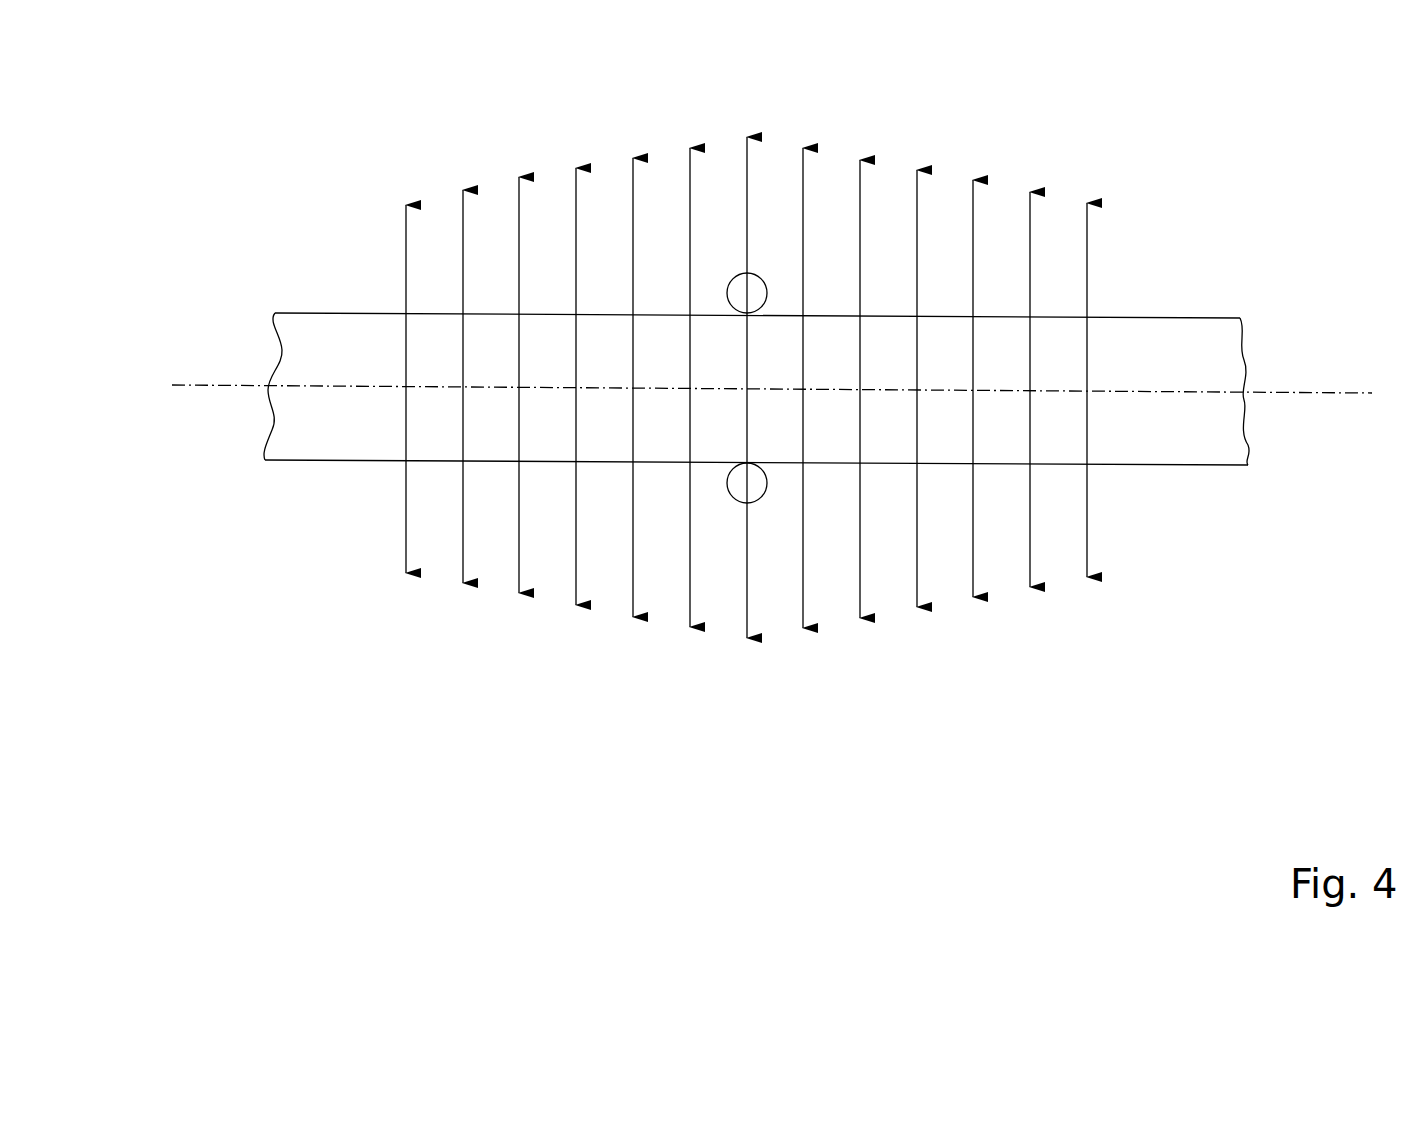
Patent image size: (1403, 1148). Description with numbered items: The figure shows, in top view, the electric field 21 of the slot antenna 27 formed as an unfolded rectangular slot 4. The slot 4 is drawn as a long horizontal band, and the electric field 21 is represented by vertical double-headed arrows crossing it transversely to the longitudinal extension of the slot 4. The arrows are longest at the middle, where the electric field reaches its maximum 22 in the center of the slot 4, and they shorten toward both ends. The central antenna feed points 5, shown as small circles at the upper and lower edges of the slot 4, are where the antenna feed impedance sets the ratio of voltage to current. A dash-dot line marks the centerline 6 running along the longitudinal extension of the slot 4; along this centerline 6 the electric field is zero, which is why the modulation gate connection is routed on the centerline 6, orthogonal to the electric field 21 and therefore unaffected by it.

The slot 4 is at (302, 432).
The antenna feed points 5 is at (740, 293).
The centerline 6 is at (1312, 395).
The electric field 21 is at (518, 538).
The maximum of the electric field 22 is at (748, 592).
The differential slot antenna 27 is at (1218, 318).